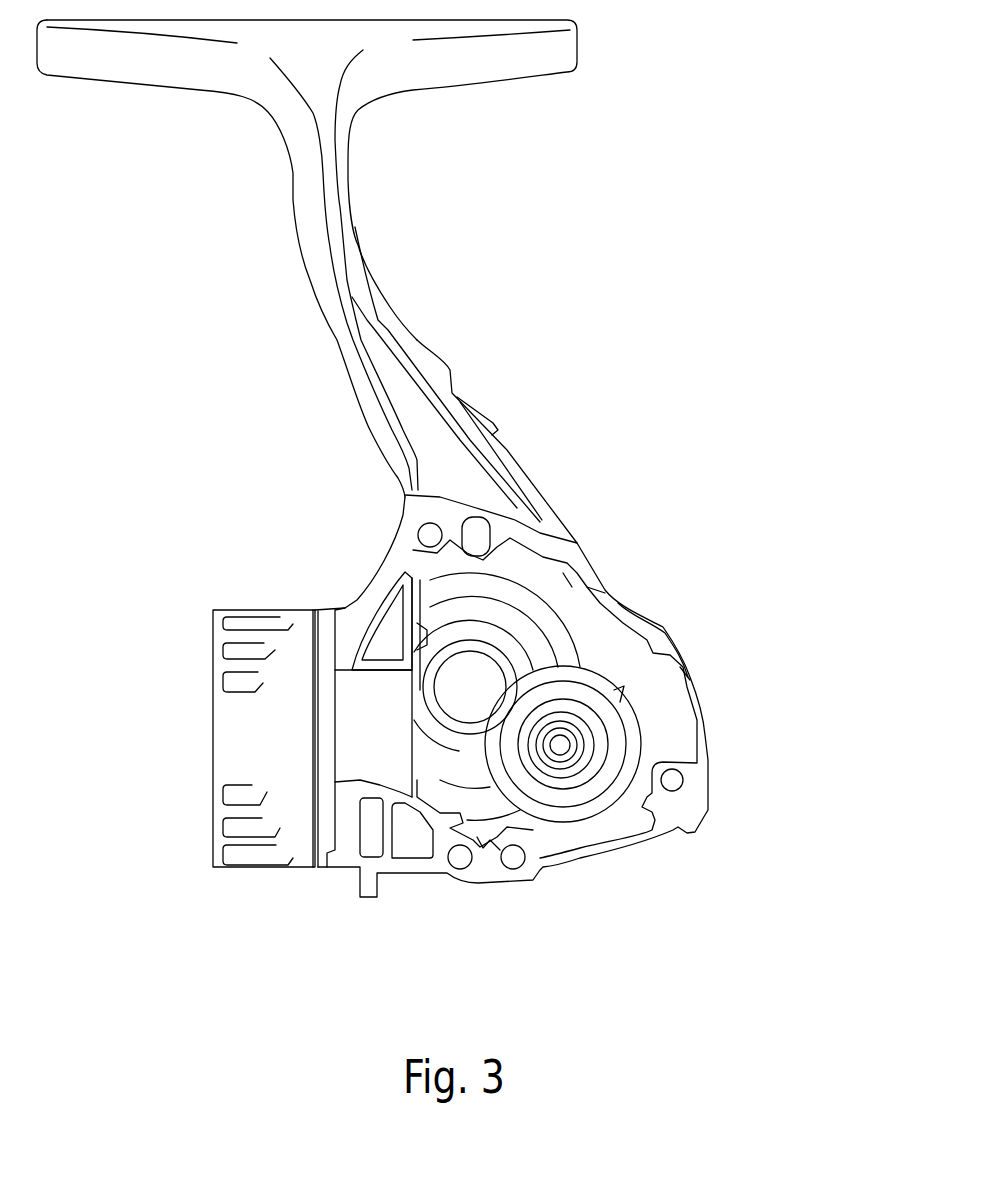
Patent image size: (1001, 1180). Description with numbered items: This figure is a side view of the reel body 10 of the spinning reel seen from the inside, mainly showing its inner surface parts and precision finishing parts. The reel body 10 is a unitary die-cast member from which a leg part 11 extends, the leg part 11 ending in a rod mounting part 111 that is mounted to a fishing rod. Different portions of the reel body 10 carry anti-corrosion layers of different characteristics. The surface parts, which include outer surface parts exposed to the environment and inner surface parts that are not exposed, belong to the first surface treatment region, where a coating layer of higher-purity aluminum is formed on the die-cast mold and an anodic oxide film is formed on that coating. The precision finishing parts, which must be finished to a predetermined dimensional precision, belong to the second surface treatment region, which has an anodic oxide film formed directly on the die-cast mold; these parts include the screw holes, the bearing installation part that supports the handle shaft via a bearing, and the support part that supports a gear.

The reel body 10 is at (565, 362).
The leg part 11 is at (458, 475).
The rod mounting part 111 is at (517, 63).